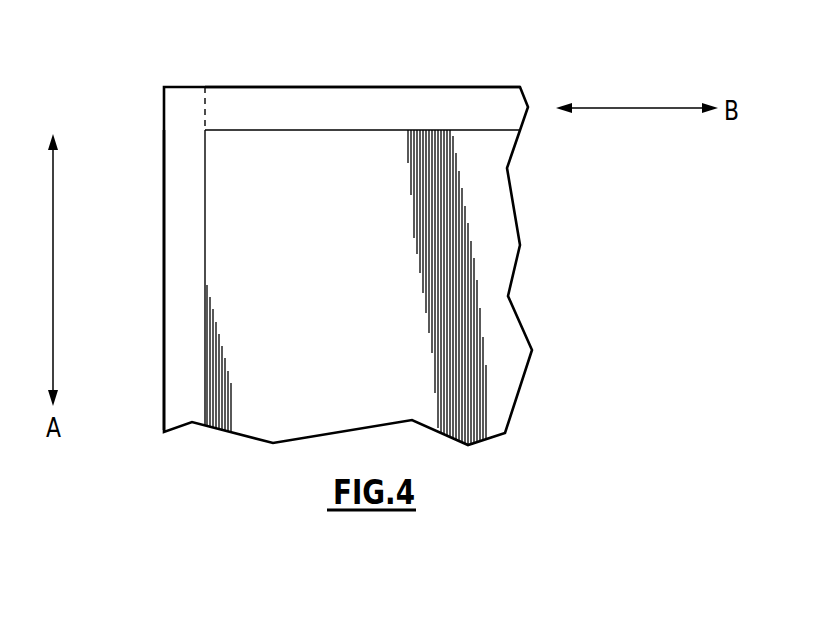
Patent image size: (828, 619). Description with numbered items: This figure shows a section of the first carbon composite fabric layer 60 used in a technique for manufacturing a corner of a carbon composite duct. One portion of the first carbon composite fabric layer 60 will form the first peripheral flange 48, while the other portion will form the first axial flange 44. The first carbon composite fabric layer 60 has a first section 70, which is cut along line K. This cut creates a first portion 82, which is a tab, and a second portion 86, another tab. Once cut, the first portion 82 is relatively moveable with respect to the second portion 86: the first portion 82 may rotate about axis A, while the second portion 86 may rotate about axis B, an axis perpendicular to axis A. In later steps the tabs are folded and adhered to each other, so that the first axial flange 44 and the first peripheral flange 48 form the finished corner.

The first section 70 is at (139, 68).
The first axial flange 44 is at (182, 273).
The first peripheral flange 48 is at (390, 108).
The first portion 82 is at (187, 103).
The line K is at (207, 106).
The second portion 86 is at (235, 107).
The first carbon composite fabric layer 60 is at (359, 260).